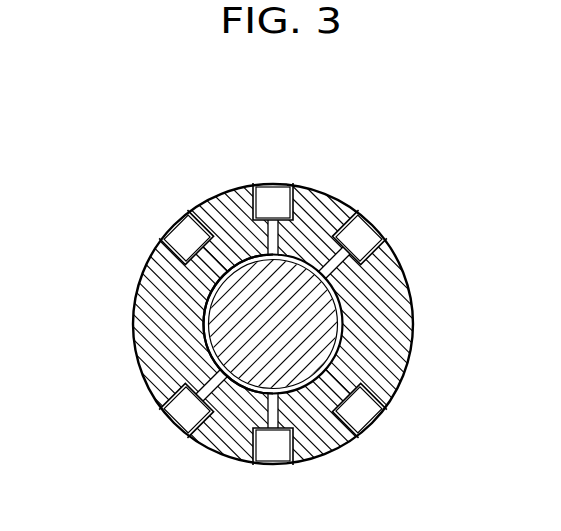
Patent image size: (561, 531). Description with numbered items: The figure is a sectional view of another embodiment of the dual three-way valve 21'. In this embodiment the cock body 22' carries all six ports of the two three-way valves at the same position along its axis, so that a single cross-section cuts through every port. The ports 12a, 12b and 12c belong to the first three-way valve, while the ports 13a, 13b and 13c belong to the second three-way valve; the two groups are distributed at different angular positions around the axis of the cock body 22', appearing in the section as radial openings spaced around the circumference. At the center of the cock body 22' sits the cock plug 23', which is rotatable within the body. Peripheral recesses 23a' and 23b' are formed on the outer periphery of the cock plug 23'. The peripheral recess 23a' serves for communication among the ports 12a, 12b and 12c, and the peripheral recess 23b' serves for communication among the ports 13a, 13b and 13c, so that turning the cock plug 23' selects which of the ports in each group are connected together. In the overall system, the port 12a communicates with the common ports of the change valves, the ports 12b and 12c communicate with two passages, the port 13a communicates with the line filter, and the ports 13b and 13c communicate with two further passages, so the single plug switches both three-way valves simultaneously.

The port 12a is at (273, 200).
The port 12b is at (187, 233).
The port 12c is at (363, 233).
The port 13a is at (268, 455).
The port 13b is at (182, 417).
The port 13c is at (360, 420).
The dual three-way valve 21' is at (322, 324).
The cock body 22' is at (280, 325).
The cock plug 23' is at (281, 325).
The peripheral recess 23a' is at (164, 290).
The peripheral recess 23b' is at (162, 359).